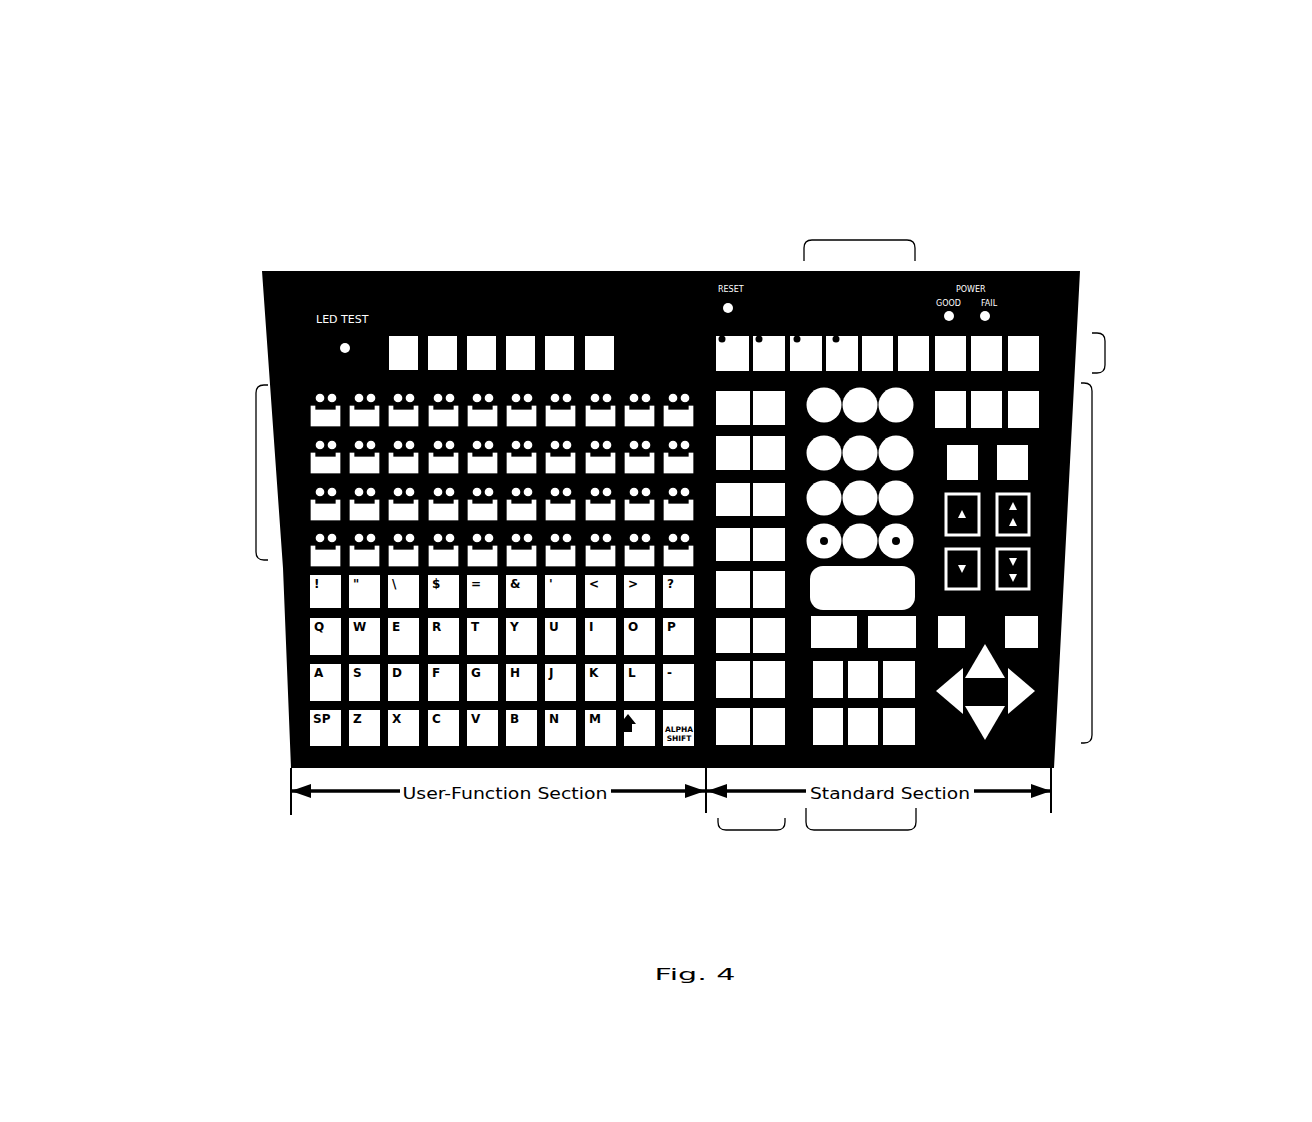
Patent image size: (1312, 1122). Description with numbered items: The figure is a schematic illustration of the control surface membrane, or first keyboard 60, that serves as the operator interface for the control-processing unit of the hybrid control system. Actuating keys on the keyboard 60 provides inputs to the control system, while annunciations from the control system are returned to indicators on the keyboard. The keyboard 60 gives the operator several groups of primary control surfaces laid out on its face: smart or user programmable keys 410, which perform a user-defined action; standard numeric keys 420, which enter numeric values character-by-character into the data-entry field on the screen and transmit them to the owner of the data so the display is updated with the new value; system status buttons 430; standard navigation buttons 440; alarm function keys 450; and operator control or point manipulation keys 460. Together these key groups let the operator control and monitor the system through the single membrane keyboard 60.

The control surface membrane or first keyboard 60 is at (335, 242).
The user programmable keys 410 is at (416, 457).
The standard numeric keys 420 is at (911, 390).
The system status buttons 430 is at (1007, 348).
The standard navigation buttons 440 is at (694, 650).
The alarm function keys 450 is at (899, 763).
The operator control or point manipulation keys 460 is at (1105, 563).